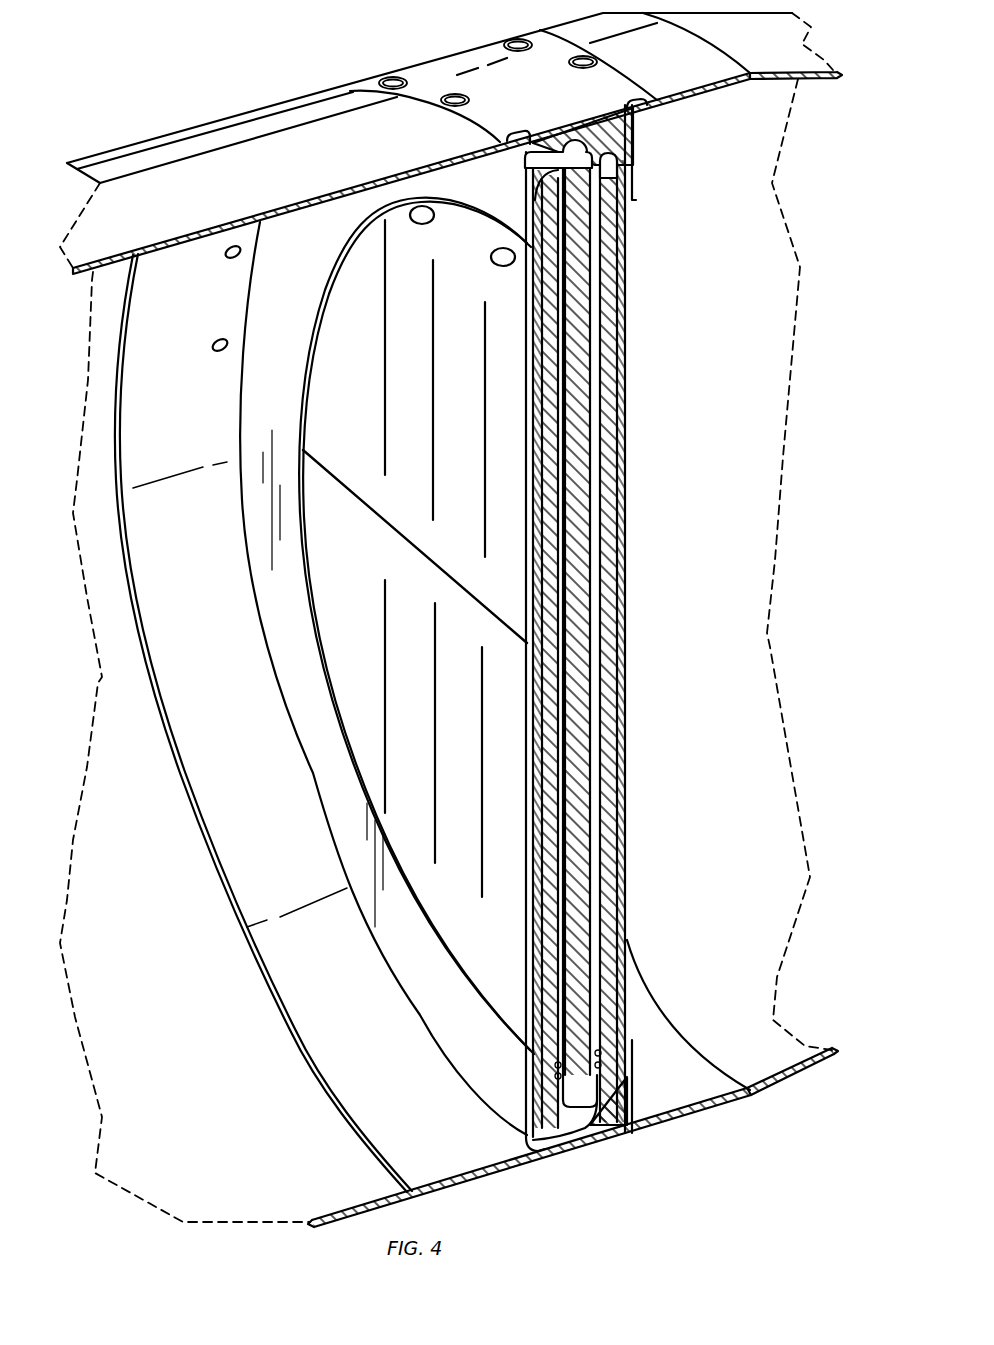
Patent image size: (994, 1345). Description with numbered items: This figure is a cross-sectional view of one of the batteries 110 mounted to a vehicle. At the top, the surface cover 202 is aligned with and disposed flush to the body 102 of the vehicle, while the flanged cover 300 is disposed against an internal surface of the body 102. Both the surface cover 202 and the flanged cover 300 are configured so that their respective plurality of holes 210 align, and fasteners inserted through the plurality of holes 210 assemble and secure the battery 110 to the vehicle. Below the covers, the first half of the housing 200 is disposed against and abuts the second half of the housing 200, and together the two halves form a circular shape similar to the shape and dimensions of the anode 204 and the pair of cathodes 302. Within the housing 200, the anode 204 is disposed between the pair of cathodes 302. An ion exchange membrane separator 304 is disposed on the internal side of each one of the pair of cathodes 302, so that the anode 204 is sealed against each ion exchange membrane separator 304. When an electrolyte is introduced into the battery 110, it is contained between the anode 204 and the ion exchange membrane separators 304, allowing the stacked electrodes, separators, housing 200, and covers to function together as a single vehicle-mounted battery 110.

The body 102 is at (255, 132).
The battery 110 is at (629, 628).
The housing 200 is at (337, 397).
The surface cover 202 is at (470, 63).
The anode 204 is at (582, 390).
The plurality of holes 210 is at (448, 95).
The flanged cover 300 is at (167, 339).
The pair of cathodes 302 is at (548, 693).
The ion exchange membrane separator 304 is at (595, 553).